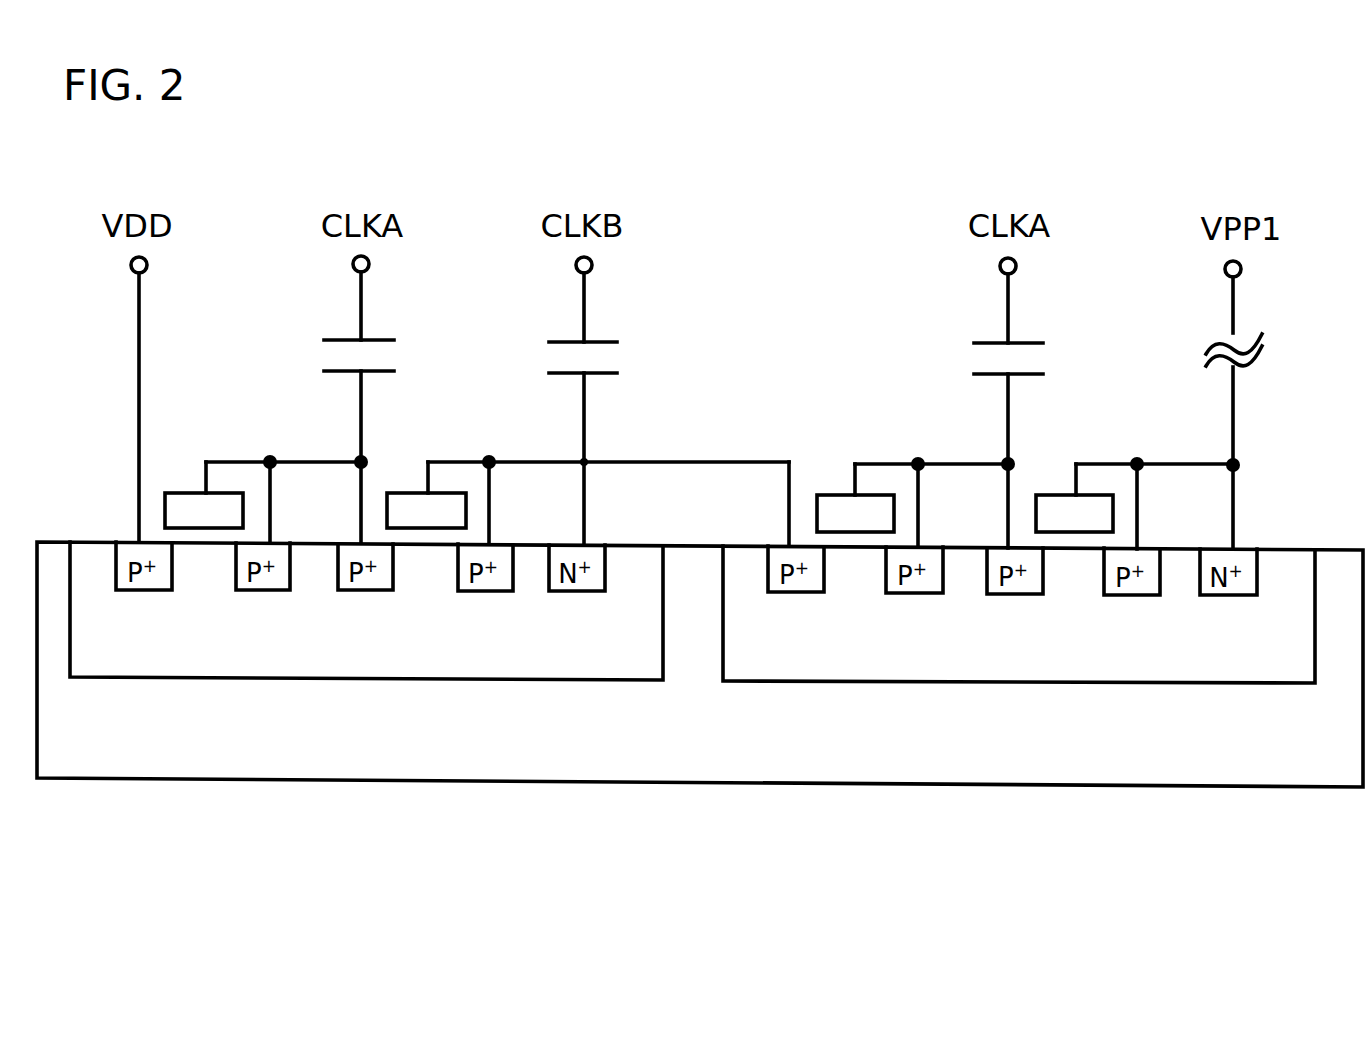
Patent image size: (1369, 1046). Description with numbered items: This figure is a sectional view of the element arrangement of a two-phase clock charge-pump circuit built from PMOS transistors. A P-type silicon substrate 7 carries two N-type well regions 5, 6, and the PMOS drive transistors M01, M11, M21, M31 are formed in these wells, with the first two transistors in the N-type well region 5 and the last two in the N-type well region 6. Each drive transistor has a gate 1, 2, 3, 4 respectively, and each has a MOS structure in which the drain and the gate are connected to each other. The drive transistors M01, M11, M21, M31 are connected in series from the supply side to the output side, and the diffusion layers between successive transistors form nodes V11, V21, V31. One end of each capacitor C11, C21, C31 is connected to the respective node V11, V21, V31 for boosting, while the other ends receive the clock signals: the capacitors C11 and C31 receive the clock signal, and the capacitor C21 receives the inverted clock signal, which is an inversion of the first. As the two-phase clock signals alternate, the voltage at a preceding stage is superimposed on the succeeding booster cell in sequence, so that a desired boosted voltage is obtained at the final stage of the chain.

The gate 1 is at (183, 500).
The gate 2 is at (407, 505).
The gate 3 is at (826, 506).
The gate 4 is at (1049, 508).
The N-type well region 5 is at (577, 662).
The N-type well region 6 is at (1210, 663).
The P-type silicon substrate 7 is at (771, 762).
The drive transistor M01 is at (204, 592).
The drive transistor M11 is at (432, 592).
The drive transistor M21 is at (851, 596).
The drive transistor M31 is at (1072, 599).
The capacitor C11 is at (328, 399).
The capacitor C21 is at (548, 401).
The capacitor C31 is at (969, 403).
The node V11 is at (287, 481).
The node V21 is at (608, 482).
The node V31 is at (935, 485).